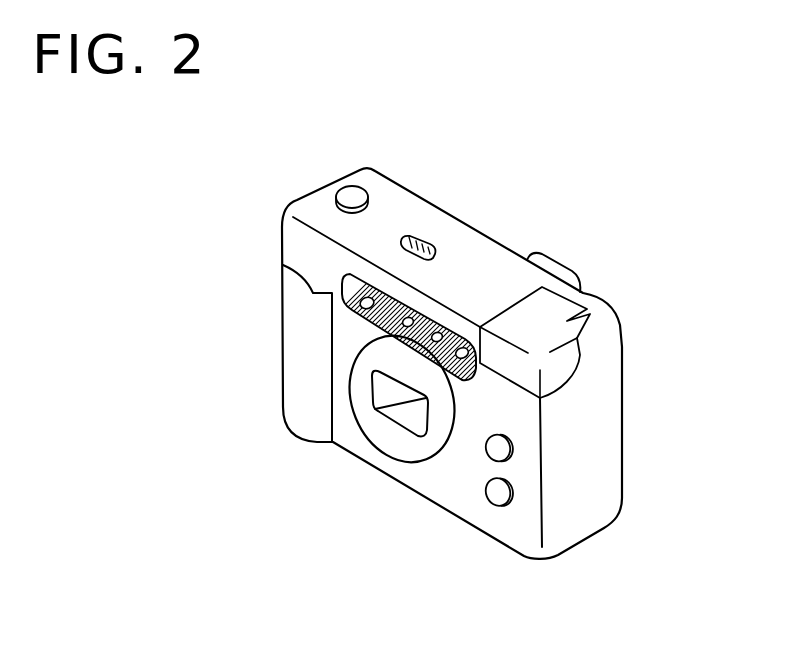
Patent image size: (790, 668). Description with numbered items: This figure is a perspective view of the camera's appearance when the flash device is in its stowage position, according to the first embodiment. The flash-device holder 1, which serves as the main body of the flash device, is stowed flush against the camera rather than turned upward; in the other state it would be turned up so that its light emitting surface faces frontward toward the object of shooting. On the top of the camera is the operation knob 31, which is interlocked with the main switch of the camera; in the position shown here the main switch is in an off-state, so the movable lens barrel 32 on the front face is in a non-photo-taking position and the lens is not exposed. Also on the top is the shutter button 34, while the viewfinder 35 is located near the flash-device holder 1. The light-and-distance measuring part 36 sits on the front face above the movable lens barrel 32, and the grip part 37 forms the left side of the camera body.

The flash-device holder 1 is at (584, 300).
The operation knob 31 is at (427, 236).
The movable lens barrel 32 is at (398, 446).
The shutter button 34 is at (352, 198).
The viewfinder 35 is at (553, 265).
The light-and-distance measuring part 36 is at (427, 314).
The grip part 37 is at (295, 377).